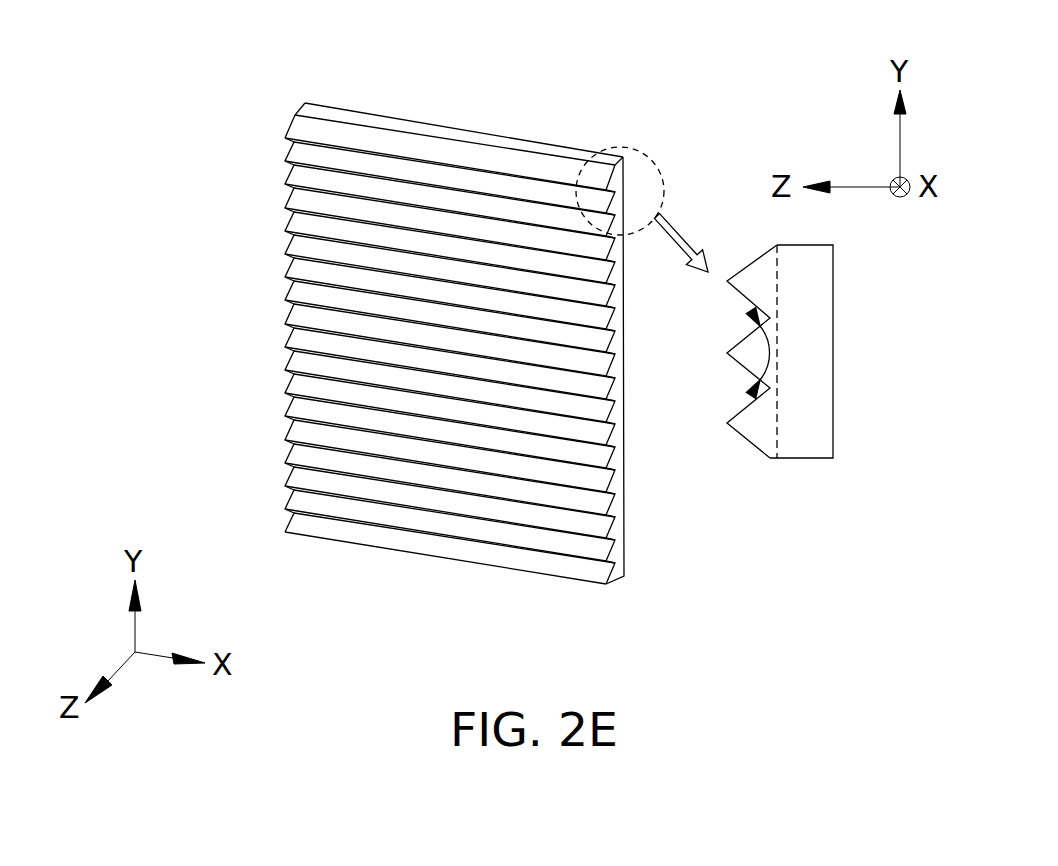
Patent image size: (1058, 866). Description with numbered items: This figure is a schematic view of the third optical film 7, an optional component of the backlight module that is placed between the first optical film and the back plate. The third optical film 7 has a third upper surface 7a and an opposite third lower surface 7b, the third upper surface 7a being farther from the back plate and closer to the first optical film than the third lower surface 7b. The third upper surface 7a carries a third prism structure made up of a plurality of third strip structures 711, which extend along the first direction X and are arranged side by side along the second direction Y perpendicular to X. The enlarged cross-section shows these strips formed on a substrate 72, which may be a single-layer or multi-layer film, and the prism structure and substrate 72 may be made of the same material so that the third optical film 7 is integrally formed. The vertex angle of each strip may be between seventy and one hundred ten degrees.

The third optical film 7 is at (322, 45).
The third upper surface 7a is at (596, 589).
The third lower surface 7b is at (625, 548).
The third strip structures 711 is at (284, 129).
The substrate 72 is at (818, 452).